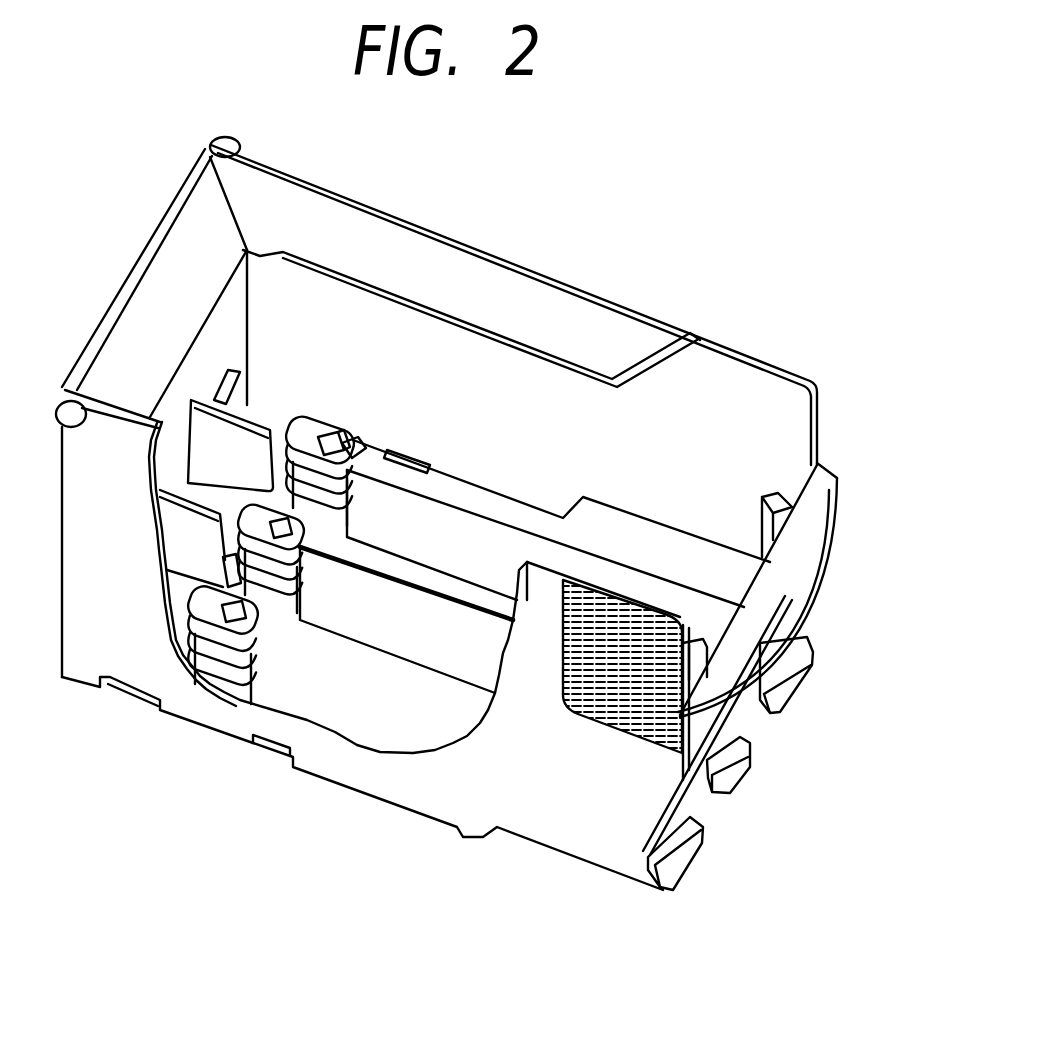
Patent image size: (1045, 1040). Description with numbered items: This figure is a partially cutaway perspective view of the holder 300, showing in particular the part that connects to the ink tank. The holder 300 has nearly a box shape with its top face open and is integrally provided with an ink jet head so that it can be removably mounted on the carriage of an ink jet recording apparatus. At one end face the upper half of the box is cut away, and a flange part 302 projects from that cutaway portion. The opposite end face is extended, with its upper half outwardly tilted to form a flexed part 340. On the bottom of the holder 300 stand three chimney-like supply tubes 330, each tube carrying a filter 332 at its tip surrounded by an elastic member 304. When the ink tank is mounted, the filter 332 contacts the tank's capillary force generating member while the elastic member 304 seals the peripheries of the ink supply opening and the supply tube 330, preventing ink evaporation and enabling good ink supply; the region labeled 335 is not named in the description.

The holder 300 is at (750, 305).
The flange part 302 is at (805, 563).
The elastic member 304 is at (310, 422).
The supply tube 330 is at (360, 435).
The filter 332 is at (341, 433).
The recess 335 is at (493, 513).
The flexed part 340 is at (167, 260).